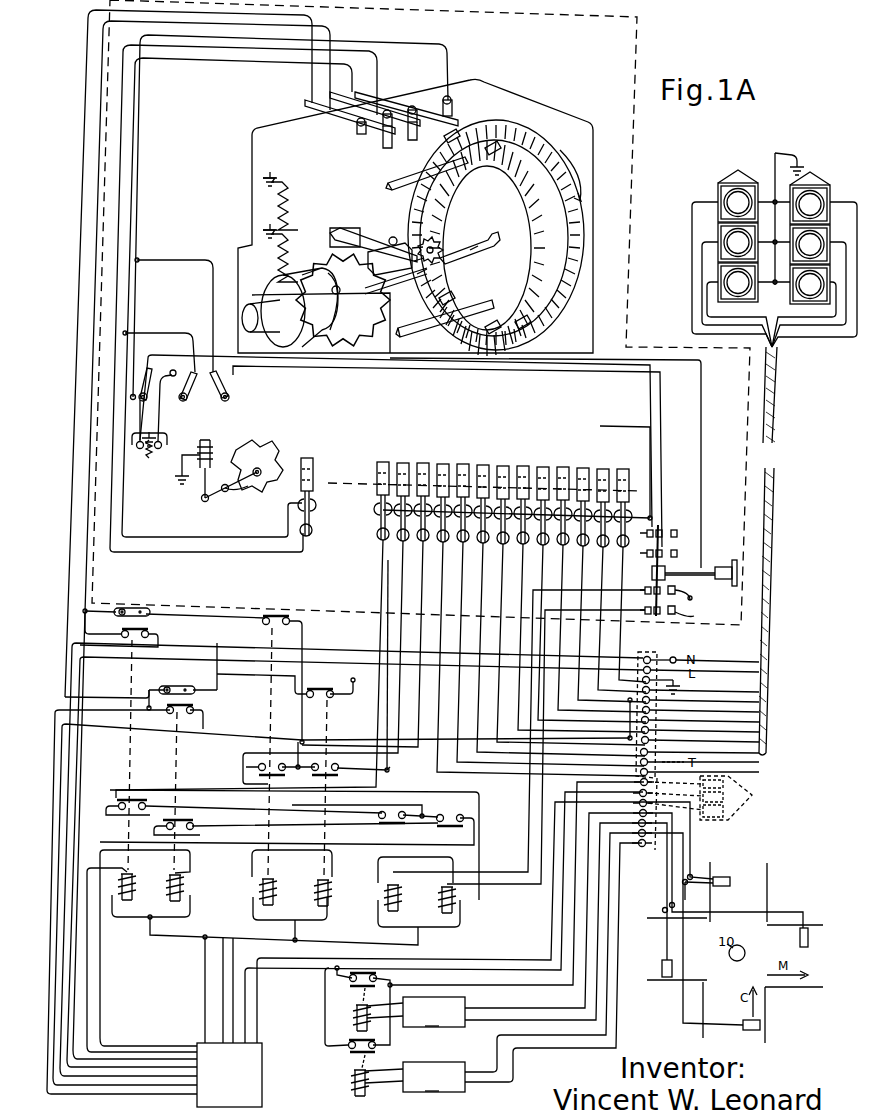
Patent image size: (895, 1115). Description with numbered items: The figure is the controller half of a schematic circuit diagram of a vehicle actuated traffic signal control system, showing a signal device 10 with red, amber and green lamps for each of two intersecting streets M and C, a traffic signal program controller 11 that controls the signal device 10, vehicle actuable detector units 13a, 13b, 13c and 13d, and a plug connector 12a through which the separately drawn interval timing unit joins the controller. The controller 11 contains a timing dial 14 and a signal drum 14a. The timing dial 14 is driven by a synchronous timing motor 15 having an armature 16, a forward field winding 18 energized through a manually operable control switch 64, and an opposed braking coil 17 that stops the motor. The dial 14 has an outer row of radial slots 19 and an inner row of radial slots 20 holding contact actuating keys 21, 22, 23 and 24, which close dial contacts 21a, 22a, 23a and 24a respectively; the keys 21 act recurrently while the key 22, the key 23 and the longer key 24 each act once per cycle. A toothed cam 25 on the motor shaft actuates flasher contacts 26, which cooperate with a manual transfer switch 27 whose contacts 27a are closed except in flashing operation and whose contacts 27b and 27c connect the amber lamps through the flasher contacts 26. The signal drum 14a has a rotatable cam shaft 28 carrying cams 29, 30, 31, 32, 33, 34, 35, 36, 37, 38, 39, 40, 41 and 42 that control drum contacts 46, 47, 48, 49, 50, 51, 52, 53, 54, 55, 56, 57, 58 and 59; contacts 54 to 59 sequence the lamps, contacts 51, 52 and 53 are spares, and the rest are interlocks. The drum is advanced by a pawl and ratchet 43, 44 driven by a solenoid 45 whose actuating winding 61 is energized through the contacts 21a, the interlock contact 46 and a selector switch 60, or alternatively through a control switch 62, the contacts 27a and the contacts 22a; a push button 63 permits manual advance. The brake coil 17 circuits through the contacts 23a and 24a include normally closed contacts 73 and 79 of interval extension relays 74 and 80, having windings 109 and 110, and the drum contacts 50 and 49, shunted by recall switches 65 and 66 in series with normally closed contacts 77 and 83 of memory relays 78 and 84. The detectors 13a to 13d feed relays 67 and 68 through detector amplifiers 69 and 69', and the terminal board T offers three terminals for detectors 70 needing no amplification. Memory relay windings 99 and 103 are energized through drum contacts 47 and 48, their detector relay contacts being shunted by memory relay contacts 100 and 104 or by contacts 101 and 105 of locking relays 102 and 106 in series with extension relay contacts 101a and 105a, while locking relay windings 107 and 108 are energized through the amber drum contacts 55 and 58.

The signal device 10 is at (752, 178).
The traffic signal program controller 11 is at (632, 168).
The plug connector 12a is at (262, 1088).
The vehicle actuable detector unit 13a is at (731, 881).
The vehicle actuable detector unit 13b is at (752, 1030).
The vehicle actuable detector unit 13c is at (662, 968).
The vehicle actuable detector unit 13d is at (799, 940).
The timing dial 14 is at (548, 175).
The signal drum 14a is at (368, 501).
The synchronous timing motor 15 is at (278, 270).
The armature 16 is at (262, 300).
The braking coil 17 is at (297, 236).
The forward field winding 18 is at (298, 198).
The outer row of radial slots 19 is at (508, 141).
The inner row of radial slots 20 is at (445, 228).
The contact actuating keys 21 is at (525, 328).
The dial contacts 21a is at (452, 105).
The key 22 is at (505, 238).
The dial contacts 22a is at (413, 106).
The key 23 is at (403, 190).
The dial contacts 23a is at (388, 110).
The longer key 24 is at (446, 322).
The dial contacts 24a is at (356, 132).
The toothed cam 25 is at (361, 300).
The flasher contacts 26 is at (332, 240).
The manual transfer switch 27 is at (708, 568).
The contacts 27a is at (660, 530).
The contact 27b is at (692, 598).
The contact 27c is at (694, 617).
The rotatable cam shaft 28 is at (340, 480).
The drum cam 29 is at (307, 458).
The drum cam 30 is at (379, 491).
The drum cam 31 is at (399, 492).
The drum cam 32 is at (419, 492).
The drum cam 33 is at (440, 493).
The drum cam 34 is at (460, 493).
The drum cam 35 is at (480, 494).
The drum cam 36 is at (499, 495).
The drum cam 37 is at (519, 496).
The drum cam 38 is at (539, 497).
The drum cam 39 is at (560, 497).
The drum cam 40 is at (579, 498).
The drum cam 41 is at (600, 499).
The drum cam 42 is at (620, 500).
The pawl 43 is at (236, 492).
The ratchet 44 is at (254, 450).
The solenoid 45 is at (200, 470).
The drum interlock contact 46 is at (312, 535).
The drum contacts 47 is at (377, 538).
The drum contacts 48 is at (404, 540).
The drum contacts 49 is at (424, 540).
The drum contacts 50 is at (444, 541).
The drum contacts 51 is at (464, 541).
The drum contacts 52 is at (484, 542).
The drum contacts 53 is at (504, 543).
The drum contacts 54 is at (524, 543).
The drum contacts 55 is at (544, 544).
The drum contacts 56 is at (564, 544).
The drum contacts 57 is at (584, 545).
The drum contacts 58 is at (604, 546).
The drum contacts 59 is at (624, 546).
The selector switch 60 is at (190, 392).
The actuating winding 61 is at (208, 446).
The control switch 62 is at (147, 378).
The push button 63 is at (150, 433).
The control switch 64 is at (225, 384).
The recall switch 65 is at (146, 618).
The recall switch 66 is at (180, 689).
The relay 67 is at (357, 1014).
The relay 68 is at (355, 1082).
The detector amplifier 69 is at (434, 1012).
The detector amplifier 69' is at (434, 1077).
The set of detectors 70 is at (752, 795).
The normally closed contacts 73 is at (120, 630).
The interval extension relay 74 is at (128, 778).
The normally closed contacts 77 is at (276, 616).
The memory relay 78 is at (272, 728).
The normally closed contacts 79 is at (188, 708).
The interval extension relay 80 is at (178, 760).
The normally closed contacts 83 is at (326, 692).
The memory relay 84 is at (327, 755).
The actuating winding 99 is at (276, 880).
The interlock contact 100 is at (278, 778).
The contact 101 is at (447, 816).
The contact 101a is at (178, 819).
The locking relay 102 is at (456, 917).
The actuating winding 103 is at (318, 886).
The contact 104 is at (340, 772).
The contact 105 is at (400, 823).
The contact 105a is at (133, 799).
The locking relay 106 is at (390, 910).
The actuating winding 107 is at (448, 880).
The actuating winding 108 is at (400, 887).
The actuating winding 109 is at (132, 879).
The actuating winding 110 is at (170, 884).